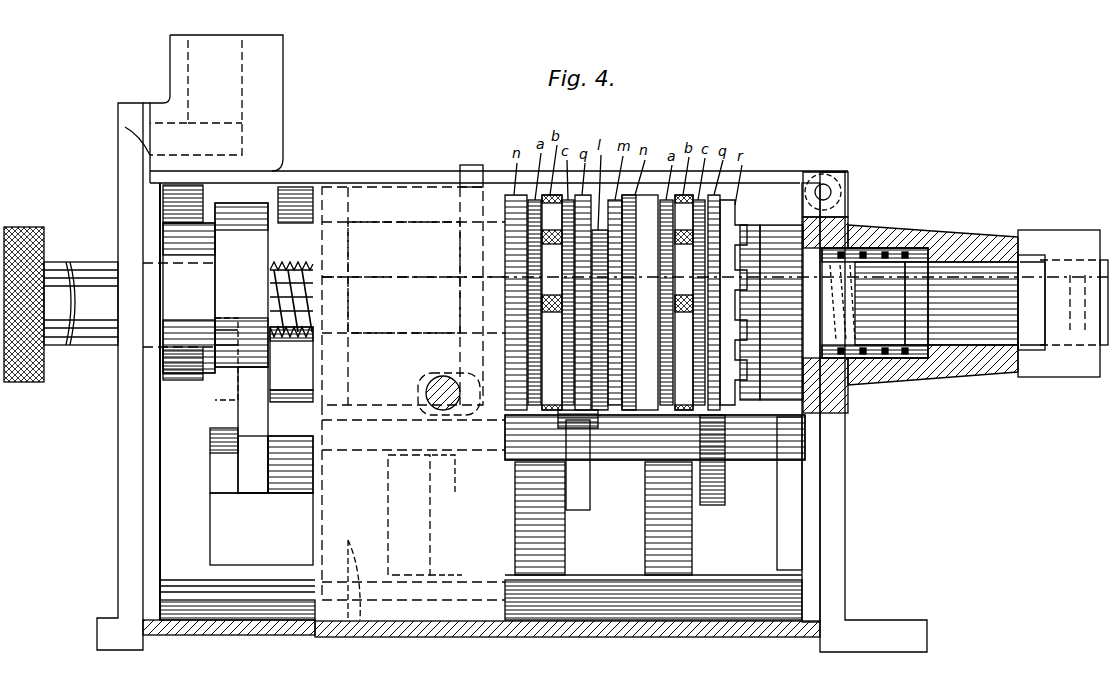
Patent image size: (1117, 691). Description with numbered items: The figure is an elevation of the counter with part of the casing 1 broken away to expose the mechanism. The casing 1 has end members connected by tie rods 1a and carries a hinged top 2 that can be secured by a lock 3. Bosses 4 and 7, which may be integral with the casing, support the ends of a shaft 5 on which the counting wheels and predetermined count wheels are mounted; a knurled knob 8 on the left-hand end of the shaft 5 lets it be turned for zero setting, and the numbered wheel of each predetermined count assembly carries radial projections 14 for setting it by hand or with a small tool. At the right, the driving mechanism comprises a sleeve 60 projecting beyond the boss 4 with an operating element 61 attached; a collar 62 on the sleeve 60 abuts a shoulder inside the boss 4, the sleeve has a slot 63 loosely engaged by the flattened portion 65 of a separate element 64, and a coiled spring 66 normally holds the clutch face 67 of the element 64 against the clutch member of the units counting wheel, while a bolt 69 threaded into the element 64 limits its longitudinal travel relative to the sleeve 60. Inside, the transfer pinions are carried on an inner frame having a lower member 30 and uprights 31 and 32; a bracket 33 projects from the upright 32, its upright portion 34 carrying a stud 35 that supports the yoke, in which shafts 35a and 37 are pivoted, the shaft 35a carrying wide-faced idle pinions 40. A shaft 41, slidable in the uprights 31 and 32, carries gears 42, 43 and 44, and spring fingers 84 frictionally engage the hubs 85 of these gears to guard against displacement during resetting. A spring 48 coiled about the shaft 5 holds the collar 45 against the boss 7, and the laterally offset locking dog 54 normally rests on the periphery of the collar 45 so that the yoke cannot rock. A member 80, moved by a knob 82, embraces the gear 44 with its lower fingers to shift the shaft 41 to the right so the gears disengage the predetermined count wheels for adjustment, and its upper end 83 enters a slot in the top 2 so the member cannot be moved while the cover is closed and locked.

The casing 1 is at (118, 470).
The tie rods 1a is at (212, 605).
The hinged top 2 is at (370, 185).
The lock 3 is at (272, 99).
The boss 4 is at (958, 240).
The shaft 5 is at (294, 262).
The boss 7 is at (185, 378).
The knurled knob 8 is at (22, 227).
The radial projections 14 is at (542, 300).
The lower member 30 is at (602, 632).
The upright member 31 is at (788, 532).
The upright member 32 is at (358, 625).
The bracket 33 is at (222, 548).
The upright portion 34 is at (215, 480).
The stud 35 is at (212, 452).
The shaft 35a is at (290, 495).
The shaft 37 is at (300, 382).
The idle pinions 40 is at (596, 490).
The shaft 41 is at (385, 425).
The wheel 42 is at (725, 480).
The gear 43 is at (575, 490).
The gear 44 is at (448, 495).
The collar 45 is at (258, 205).
The spring 48 is at (300, 345).
The locking dog 54 is at (222, 390).
The sleeve 60 is at (965, 357).
The operating element 61 is at (1065, 230).
The collar 62 is at (910, 358).
The slot 63 is at (868, 360).
The element 64 is at (775, 230).
The flattened portion 65 is at (848, 262).
The coiled spring 66 is at (880, 262).
The clutch face 67 is at (745, 230).
The bolt 69 is at (1030, 350).
The member 80 is at (460, 256).
The knob 82 is at (436, 380).
The upper end 83 is at (474, 165).
The spring fingers 84 is at (645, 565).
The hubs 85 is at (708, 525).